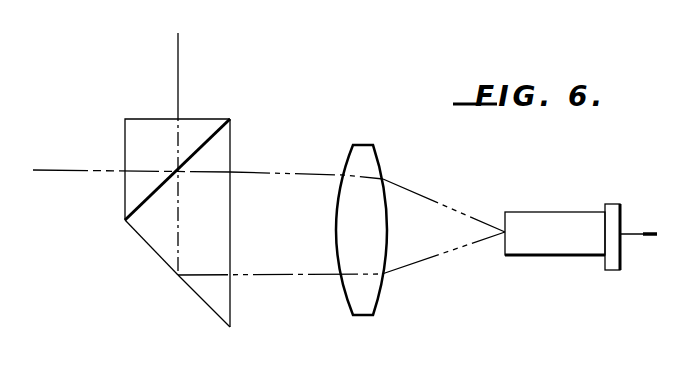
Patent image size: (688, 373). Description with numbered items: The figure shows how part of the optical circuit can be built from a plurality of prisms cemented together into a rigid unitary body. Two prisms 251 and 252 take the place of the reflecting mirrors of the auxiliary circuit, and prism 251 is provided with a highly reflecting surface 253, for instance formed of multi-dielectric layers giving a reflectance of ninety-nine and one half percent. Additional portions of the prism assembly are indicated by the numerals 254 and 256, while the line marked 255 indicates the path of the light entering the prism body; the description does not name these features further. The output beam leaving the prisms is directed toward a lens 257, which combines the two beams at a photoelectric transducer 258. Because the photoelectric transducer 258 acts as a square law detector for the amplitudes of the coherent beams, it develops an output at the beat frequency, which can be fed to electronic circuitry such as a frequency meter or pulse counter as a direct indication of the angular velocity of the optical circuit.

The prism 251 is at (157, 119).
The prism 252 is at (152, 238).
The highly reflecting surface 253 is at (143, 200).
The prism face 254 is at (213, 313).
The optical axis 255 is at (68, 169).
The prism surface 256 is at (206, 119).
The lens 257 is at (337, 227).
The photoelectric transducer 258 is at (542, 212).